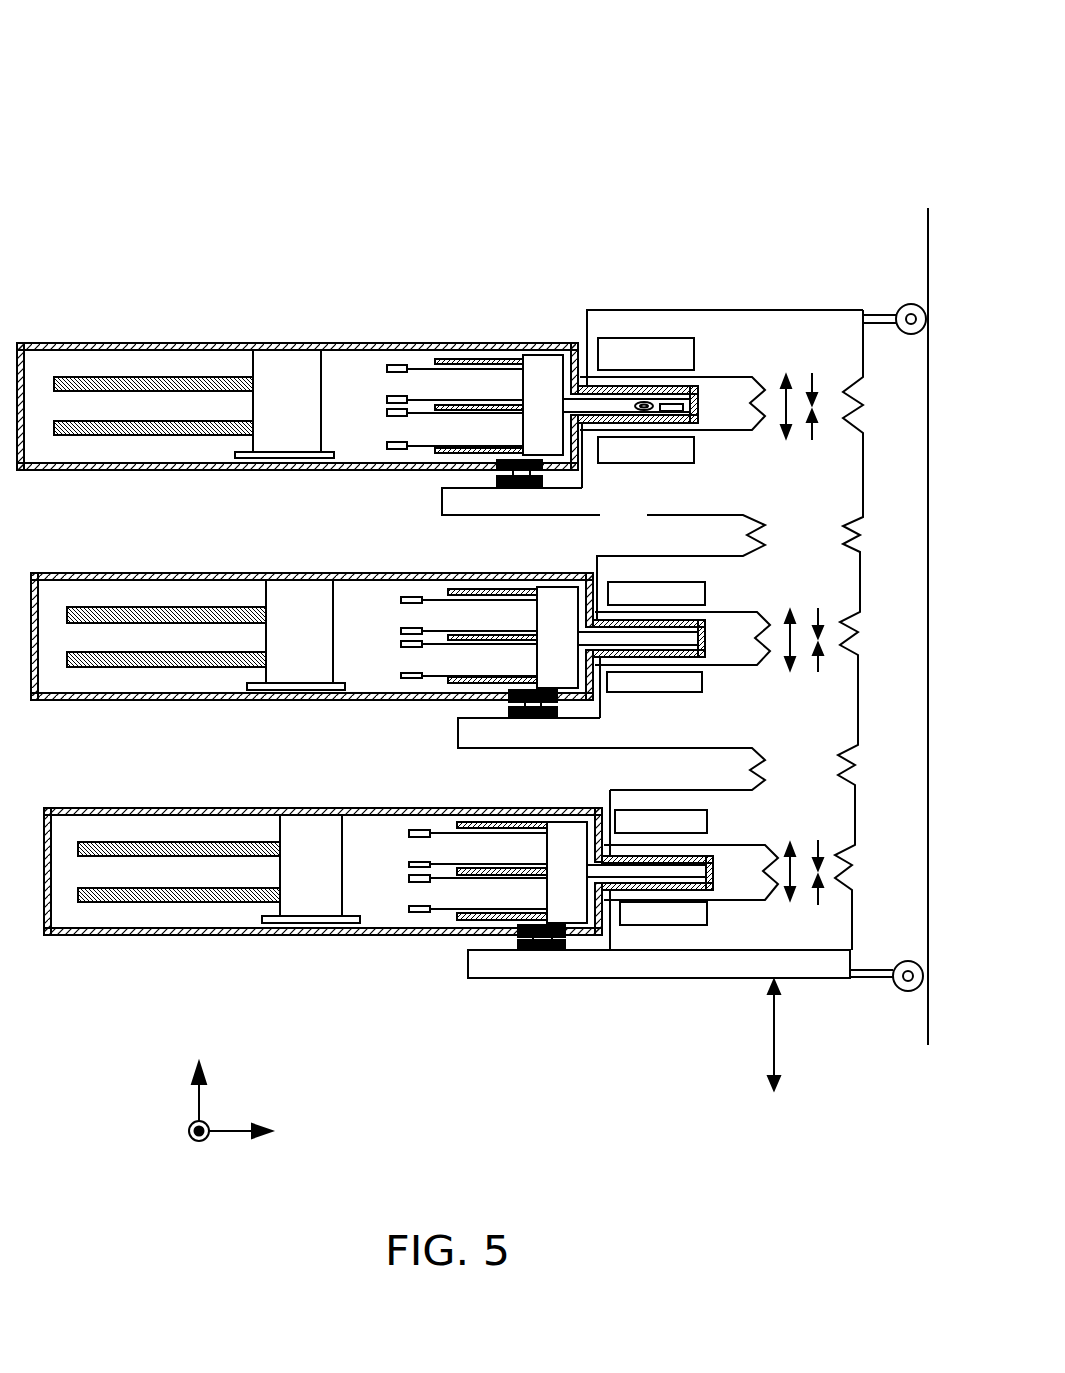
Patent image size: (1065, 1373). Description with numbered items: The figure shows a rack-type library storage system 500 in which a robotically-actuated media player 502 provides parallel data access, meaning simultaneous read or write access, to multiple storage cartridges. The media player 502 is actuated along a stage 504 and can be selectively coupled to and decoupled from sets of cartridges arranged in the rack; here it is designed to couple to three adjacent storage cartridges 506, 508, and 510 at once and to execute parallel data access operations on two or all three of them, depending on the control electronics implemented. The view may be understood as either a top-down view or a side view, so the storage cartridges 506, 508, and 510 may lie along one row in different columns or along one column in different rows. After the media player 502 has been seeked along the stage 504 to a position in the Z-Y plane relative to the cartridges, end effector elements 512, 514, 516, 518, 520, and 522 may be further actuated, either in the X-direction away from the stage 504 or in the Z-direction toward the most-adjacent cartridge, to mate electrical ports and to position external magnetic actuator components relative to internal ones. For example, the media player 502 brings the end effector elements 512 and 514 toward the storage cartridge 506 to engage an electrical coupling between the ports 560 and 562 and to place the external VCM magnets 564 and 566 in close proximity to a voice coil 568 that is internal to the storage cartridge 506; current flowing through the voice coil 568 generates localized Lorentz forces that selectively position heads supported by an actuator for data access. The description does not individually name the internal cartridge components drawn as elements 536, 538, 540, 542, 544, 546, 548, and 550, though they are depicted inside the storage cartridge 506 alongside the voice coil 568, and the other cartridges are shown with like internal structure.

The rack-type library storage system 500 is at (106, 76).
The robotically-actuated media player 502 is at (659, 964).
The stage 504 is at (906, 262).
The storage cartridge 506 is at (112, 346).
The storage cartridge 508 is at (120, 574).
The storage cartridge 510 is at (130, 809).
The end effector element 512 is at (697, 381).
The end effector element 514 is at (470, 502).
The end effector element 516 is at (598, 570).
The end effector element 518 is at (482, 735).
The end effector element 520 is at (610, 795).
The end effector element 522 is at (490, 962).
The first disk 536 is at (92, 378).
The second disk 538 is at (92, 422).
The head suspension arms 540 is at (493, 359).
The head leads 542 is at (453, 402).
The actuator block 544 is at (495, 450).
The read/write heads 546 is at (388, 367).
The spindle motor 548 is at (302, 416).
The base plate 550 is at (240, 455).
The port 560 is at (603, 561).
The port 562 is at (570, 467).
The external VCM magnet 564 is at (664, 366).
The external VCM magnet 566 is at (664, 463).
The voice coil 568 is at (673, 406).